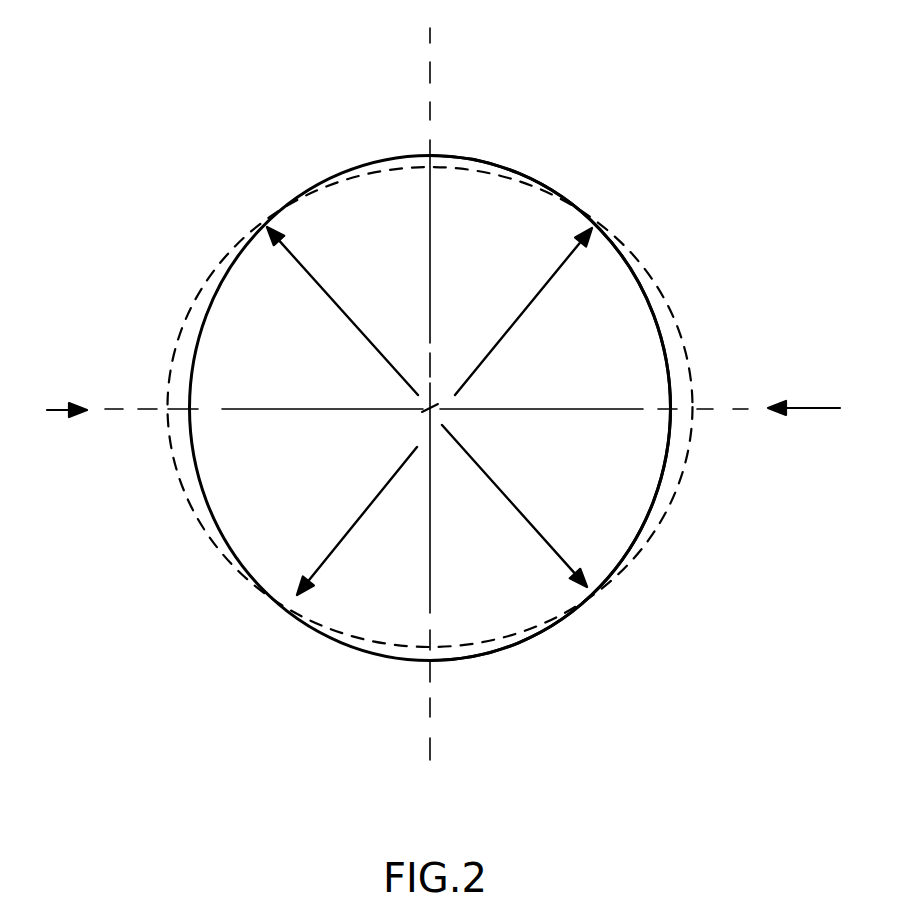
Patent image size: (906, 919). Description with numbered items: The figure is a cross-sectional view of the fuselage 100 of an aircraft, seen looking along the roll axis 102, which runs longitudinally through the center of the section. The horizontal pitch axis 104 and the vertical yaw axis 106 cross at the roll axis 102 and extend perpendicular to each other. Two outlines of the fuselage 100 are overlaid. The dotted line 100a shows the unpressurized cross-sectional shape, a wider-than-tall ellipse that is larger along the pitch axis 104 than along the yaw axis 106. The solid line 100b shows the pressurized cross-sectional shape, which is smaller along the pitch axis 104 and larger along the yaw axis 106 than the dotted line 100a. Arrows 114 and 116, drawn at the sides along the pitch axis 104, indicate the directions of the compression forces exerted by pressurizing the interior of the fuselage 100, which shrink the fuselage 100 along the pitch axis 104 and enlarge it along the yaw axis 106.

The fuselage 100 is at (589, 112).
The dotted line 100a is at (677, 297).
The solid line 100b is at (661, 529).
The roll axis 102 is at (432, 407).
The pitch axis 104 is at (111, 411).
The yaw axis 106 is at (430, 44).
The arrow 114 is at (811, 408).
The arrow 116 is at (68, 411).